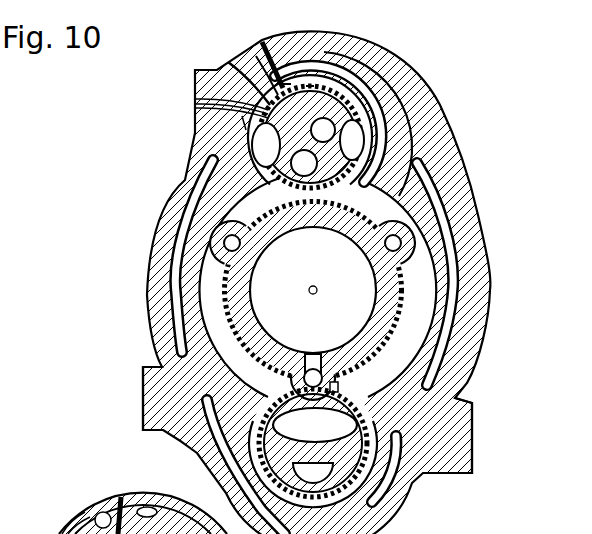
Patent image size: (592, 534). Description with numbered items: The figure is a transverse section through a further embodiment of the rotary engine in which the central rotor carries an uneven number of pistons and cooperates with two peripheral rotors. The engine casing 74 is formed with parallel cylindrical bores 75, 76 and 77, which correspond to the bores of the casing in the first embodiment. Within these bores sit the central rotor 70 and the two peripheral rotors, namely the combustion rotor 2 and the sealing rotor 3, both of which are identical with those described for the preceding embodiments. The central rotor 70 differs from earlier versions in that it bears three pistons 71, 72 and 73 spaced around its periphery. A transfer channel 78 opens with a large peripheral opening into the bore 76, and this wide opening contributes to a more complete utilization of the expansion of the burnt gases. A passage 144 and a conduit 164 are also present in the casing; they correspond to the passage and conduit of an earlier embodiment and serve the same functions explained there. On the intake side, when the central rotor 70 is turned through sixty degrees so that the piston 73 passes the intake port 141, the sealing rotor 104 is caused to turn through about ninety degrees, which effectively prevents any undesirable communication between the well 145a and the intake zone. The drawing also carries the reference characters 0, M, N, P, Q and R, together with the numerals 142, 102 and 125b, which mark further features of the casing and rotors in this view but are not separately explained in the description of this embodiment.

The engine casing 74 is at (385, 60).
The cylindrical bore 75 is at (203, 296).
The cylindrical bore 76 is at (256, 162).
The cylindrical bore 77 is at (332, 490).
The transfer channel 78 is at (378, 143).
The central rotor 70 is at (372, 318).
The piston 71 is at (256, 250).
The piston 72 is at (383, 253).
The piston 73 is at (323, 357).
The combustion rotor 2 is at (366, 122).
The sealing rotor 3 is at (275, 385).
The passage 0 is at (380, 162).
The port M is at (287, 83).
The port N is at (310, 83).
The passage P is at (228, 67).
The passage Q is at (258, 60).
The passage R is at (242, 123).
The passage 144 is at (266, 58).
The conduit 164 is at (212, 104).
The well 145a is at (334, 388).
The sealing rotor 104 is at (325, 452).
The intake port 141 is at (145, 404).
The mounting flange 142 is at (476, 433).
The gear ring 102 is at (187, 518).
The slot 125b is at (165, 503).